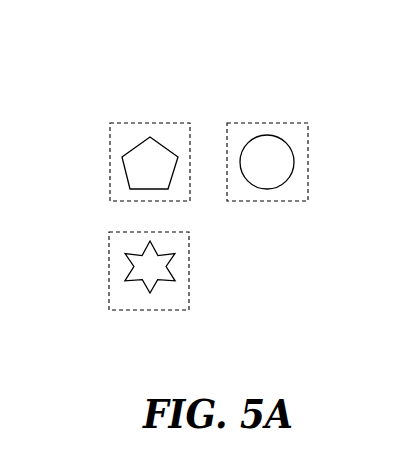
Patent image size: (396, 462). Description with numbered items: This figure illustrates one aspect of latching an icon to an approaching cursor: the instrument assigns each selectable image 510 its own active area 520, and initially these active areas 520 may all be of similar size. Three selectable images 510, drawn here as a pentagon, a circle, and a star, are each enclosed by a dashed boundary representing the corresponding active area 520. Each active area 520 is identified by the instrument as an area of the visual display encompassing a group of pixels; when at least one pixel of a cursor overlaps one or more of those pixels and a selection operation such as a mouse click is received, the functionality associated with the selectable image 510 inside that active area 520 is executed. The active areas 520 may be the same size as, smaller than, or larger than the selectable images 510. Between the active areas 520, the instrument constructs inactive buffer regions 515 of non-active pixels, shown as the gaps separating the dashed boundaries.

The selectable image 510 is at (209, 113).
The inactive buffer region 515 is at (229, 224).
The active area 520 is at (120, 208).